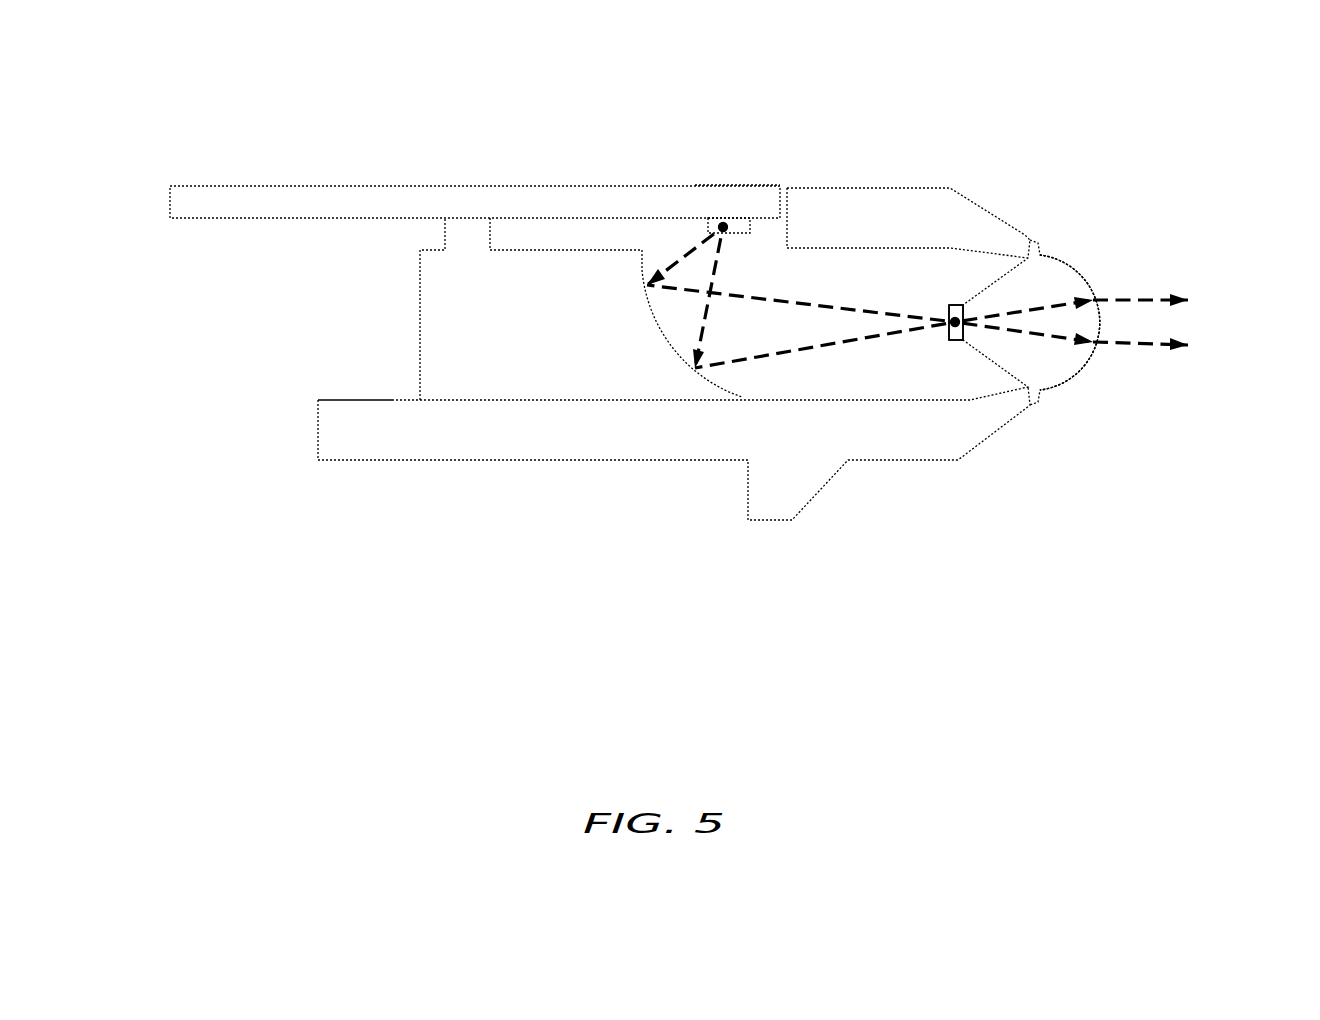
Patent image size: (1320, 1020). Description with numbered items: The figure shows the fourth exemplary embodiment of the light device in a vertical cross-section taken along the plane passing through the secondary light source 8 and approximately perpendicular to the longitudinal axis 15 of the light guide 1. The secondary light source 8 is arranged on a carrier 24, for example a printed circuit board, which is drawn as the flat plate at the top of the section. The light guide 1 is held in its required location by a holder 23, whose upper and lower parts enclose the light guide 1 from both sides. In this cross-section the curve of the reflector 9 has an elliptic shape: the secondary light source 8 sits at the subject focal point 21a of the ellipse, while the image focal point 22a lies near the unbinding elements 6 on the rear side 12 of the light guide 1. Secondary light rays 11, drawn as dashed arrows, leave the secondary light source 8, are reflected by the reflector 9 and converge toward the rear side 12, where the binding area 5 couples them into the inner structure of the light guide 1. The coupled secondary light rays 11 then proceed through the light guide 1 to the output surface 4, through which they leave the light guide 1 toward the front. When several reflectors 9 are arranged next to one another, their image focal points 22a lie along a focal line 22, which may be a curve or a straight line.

The light guide 1 is at (1053, 283).
The output surface 4 is at (1093, 321).
The binding area 5 is at (947, 313).
The unbinding elements 6 is at (953, 340).
The secondary light source 8 is at (678, 133).
The reflector 9 is at (653, 318).
The secondary light rays 11 is at (777, 356).
The rear side of the light guide 12 is at (854, 186).
The longitudinal axis 15 is at (1048, 322).
The subject focal point 21a is at (723, 227).
The focal line 22 is at (904, 186).
The image focal point 22a is at (955, 305).
The holder 23 is at (940, 188).
The carrier 24 is at (388, 186).